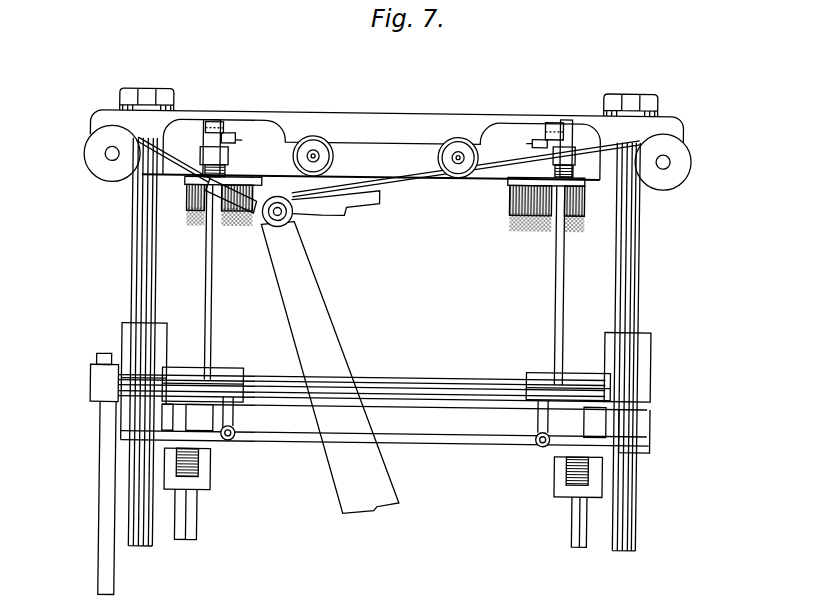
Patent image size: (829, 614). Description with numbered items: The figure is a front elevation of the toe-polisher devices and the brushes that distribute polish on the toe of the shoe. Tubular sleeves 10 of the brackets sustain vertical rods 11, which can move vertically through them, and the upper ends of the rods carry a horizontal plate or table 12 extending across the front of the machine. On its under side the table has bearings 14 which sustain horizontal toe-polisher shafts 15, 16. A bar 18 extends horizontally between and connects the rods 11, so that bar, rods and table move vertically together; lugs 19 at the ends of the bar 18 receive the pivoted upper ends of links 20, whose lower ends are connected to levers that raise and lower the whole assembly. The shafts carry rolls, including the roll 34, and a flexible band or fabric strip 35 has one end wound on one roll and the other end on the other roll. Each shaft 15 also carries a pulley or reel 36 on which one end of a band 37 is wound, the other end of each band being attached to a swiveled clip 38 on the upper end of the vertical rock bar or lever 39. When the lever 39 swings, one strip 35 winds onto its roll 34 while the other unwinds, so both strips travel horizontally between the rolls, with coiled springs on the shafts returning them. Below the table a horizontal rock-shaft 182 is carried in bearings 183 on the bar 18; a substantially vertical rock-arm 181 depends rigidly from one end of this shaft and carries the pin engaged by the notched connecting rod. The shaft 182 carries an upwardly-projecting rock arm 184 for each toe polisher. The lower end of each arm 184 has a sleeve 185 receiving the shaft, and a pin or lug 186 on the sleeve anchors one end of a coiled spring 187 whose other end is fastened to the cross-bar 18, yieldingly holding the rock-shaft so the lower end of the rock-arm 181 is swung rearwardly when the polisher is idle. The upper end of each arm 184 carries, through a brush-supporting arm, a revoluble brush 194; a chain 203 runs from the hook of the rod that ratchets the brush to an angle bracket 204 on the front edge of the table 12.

The tubular sleeve 10 is at (121, 335).
The vertical rod 11 is at (130, 258).
The plate or table 12 is at (371, 113).
The bearing 14 is at (309, 140).
The toe-polisher shaft 15 is at (107, 162).
The toe-polisher shaft 16 is at (314, 155).
The bar 18 is at (455, 446).
The lug 19 is at (196, 463).
The link 20 is at (200, 523).
The roll 34 is at (331, 161).
The flexible band or fabric strip 35 is at (277, 176).
The pulley or reel 36 is at (82, 150).
The band 37 is at (153, 135).
The swiveled clip 38 is at (253, 222).
The rock bar or lever 39 is at (328, 328).
The rock-arm 181 is at (101, 556).
The rock-shaft 182 is at (429, 385).
The bearing 183 is at (178, 369).
The rock arm 184 is at (213, 322).
The sleeve 185 is at (234, 370).
The pin or lug 186 is at (240, 387).
The coiled spring 187 is at (237, 441).
The revoluble brush 194 is at (197, 229).
The chain 203 is at (229, 136).
The angle bracket 204 is at (214, 122).